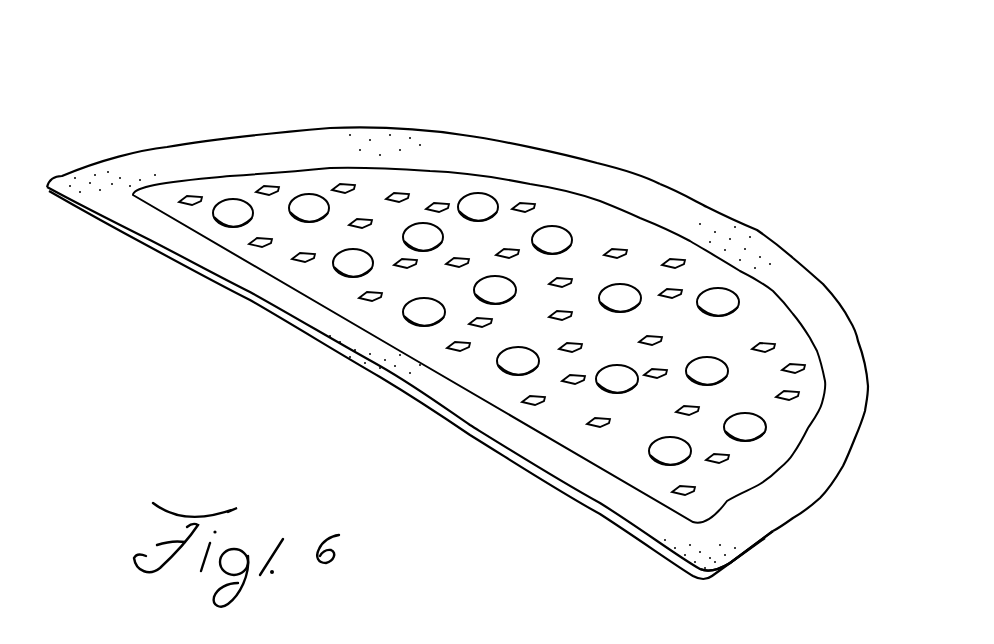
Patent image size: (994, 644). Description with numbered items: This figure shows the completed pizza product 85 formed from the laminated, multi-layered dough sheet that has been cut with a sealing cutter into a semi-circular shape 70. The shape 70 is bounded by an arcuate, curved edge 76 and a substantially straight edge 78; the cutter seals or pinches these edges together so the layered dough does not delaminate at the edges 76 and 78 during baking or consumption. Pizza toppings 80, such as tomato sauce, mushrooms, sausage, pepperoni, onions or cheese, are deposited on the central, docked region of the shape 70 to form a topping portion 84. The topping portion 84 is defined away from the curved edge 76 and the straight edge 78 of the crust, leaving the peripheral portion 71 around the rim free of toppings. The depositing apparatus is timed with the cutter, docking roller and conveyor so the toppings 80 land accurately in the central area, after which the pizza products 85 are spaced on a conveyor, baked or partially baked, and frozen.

The semi-circular shape 70 is at (586, 146).
The peripheral portion 71 is at (740, 517).
The arcuate, curved edge 76 is at (793, 258).
The substantially straight edge 78 is at (413, 407).
The pizza toppings 80 is at (560, 428).
The topping portion 84 is at (339, 287).
The pizza product 85 is at (197, 133).